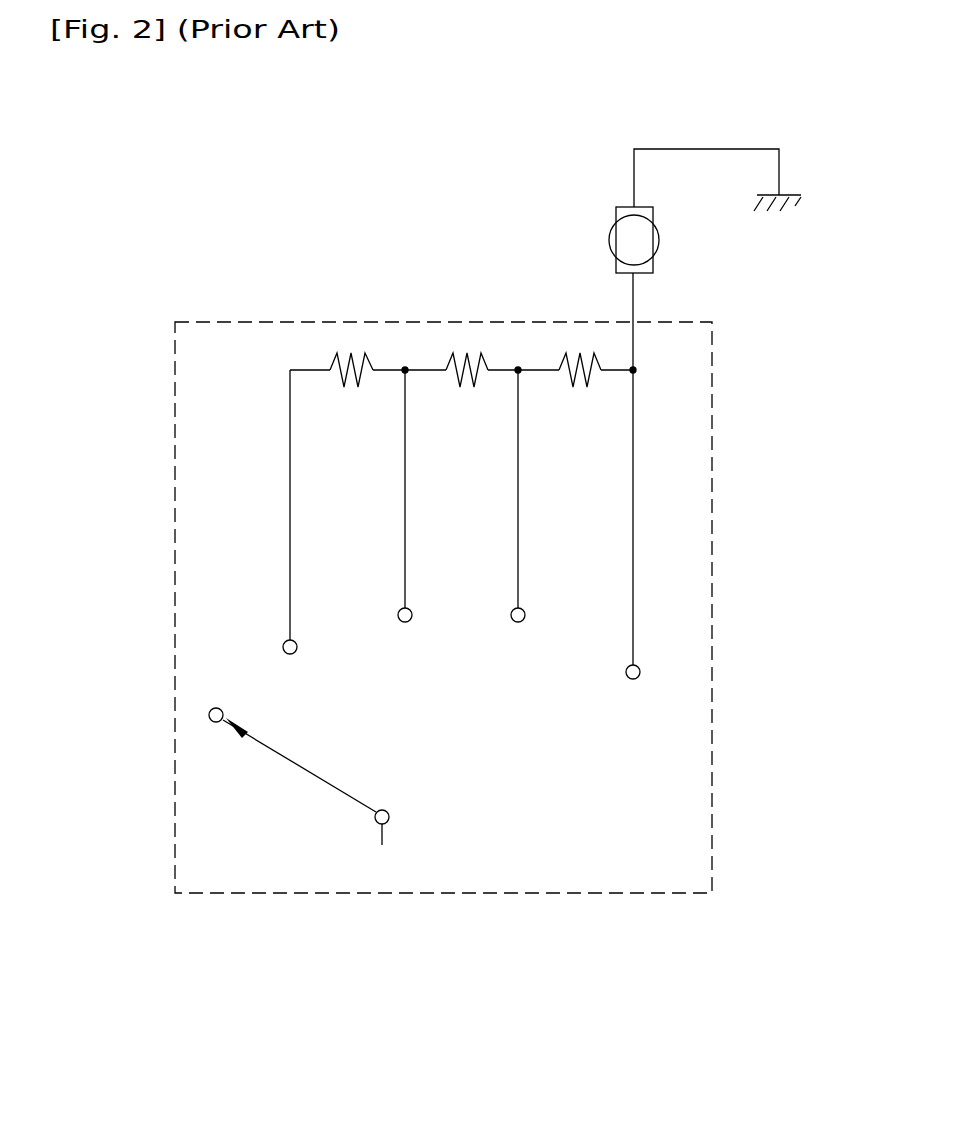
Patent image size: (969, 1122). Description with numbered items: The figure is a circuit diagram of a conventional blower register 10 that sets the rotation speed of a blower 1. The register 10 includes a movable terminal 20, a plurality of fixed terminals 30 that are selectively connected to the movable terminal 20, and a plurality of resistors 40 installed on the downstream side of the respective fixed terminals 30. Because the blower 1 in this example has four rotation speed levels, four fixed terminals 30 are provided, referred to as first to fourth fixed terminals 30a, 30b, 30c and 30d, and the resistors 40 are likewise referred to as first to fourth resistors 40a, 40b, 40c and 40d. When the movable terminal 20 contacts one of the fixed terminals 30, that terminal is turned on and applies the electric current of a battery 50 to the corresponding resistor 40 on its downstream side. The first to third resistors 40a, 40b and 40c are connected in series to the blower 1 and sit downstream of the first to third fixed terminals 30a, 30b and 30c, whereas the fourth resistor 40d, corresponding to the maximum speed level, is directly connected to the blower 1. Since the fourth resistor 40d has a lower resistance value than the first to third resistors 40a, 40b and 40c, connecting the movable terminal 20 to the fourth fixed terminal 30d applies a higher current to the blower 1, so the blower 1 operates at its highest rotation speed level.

The blower 1 is at (606, 206).
The register 10 is at (495, 893).
The movable terminal 20 is at (330, 787).
The fixed terminals 30 is at (449, 533).
The first fixed terminal 30a is at (283, 641).
The second fixed terminal 30b is at (399, 609).
The third fixed terminal 30c is at (524, 611).
The fourth fixed terminal 30d is at (640, 667).
The resistors 40 is at (573, 453).
The first resistor 40a is at (345, 360).
The second resistor 40b is at (460, 360).
The third resistor 40c is at (575, 360).
The fourth resistor 40d is at (634, 422).
The battery 50 is at (390, 880).